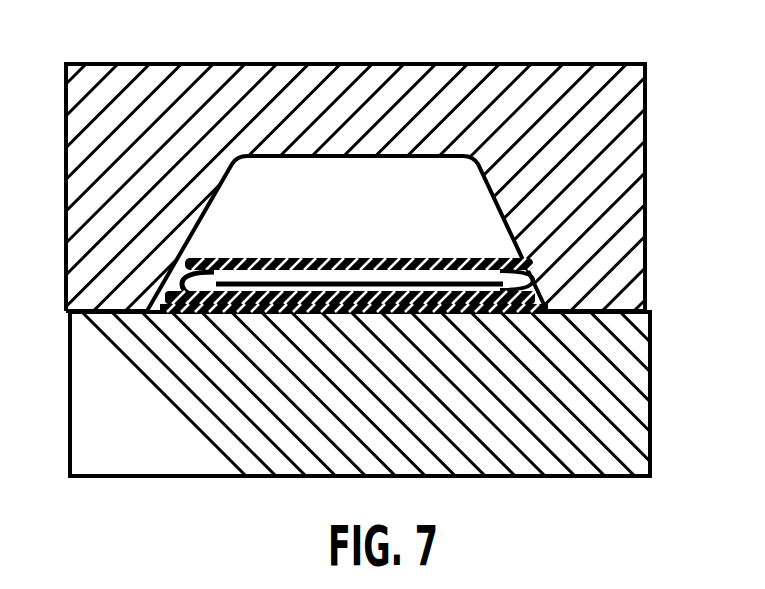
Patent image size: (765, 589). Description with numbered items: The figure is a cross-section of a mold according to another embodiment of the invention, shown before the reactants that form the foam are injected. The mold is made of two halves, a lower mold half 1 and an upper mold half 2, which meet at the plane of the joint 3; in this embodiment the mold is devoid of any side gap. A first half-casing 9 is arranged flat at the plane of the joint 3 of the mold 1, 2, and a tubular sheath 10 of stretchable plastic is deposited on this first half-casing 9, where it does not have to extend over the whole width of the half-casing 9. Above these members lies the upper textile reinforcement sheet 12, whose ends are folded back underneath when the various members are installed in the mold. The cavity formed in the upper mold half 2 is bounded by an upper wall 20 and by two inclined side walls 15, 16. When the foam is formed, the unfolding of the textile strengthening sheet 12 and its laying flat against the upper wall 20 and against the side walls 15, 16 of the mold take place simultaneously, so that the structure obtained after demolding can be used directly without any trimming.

The mold half 1 is at (122, 397).
The mold half 2 is at (622, 120).
The plane of the joint 3 is at (113, 309).
The first half-casing 9 is at (497, 312).
The tubular sheath 10 is at (370, 259).
The upper textile reinforcement sheet 12 is at (290, 259).
The side wall 15 is at (220, 187).
The side wall 16 is at (520, 202).
The upper wall 20 is at (417, 156).